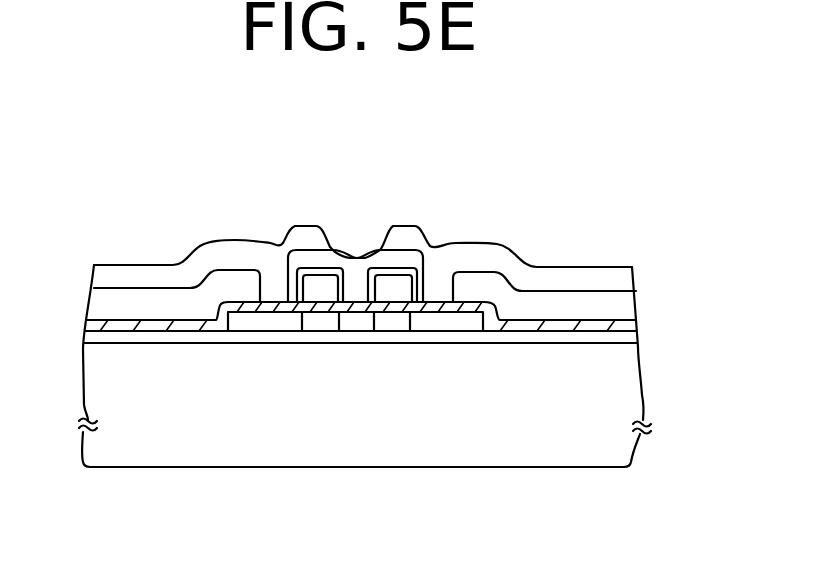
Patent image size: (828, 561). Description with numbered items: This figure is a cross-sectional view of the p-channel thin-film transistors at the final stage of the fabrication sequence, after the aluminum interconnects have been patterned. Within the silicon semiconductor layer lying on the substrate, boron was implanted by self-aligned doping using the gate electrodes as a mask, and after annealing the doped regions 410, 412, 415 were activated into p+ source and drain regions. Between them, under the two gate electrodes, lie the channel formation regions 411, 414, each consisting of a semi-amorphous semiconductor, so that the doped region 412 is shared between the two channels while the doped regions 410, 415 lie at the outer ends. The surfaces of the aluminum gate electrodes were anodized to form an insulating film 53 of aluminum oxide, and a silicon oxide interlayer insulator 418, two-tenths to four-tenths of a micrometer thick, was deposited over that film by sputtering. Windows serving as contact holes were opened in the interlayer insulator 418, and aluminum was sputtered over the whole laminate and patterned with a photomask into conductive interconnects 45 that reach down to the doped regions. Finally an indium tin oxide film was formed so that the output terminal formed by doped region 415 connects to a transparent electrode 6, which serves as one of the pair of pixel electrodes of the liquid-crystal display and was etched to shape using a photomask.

The transparent electrode 6 is at (138, 273).
The conductive interconnects 45 is at (582, 277).
The insulating film 53 is at (325, 275).
The interlayer insulator 418 is at (378, 257).
The doped region 410 is at (457, 332).
The channel formation region 411 is at (395, 332).
The doped region 412 is at (353, 332).
The channel formation region 414 is at (315, 332).
The doped region 415 is at (253, 332).